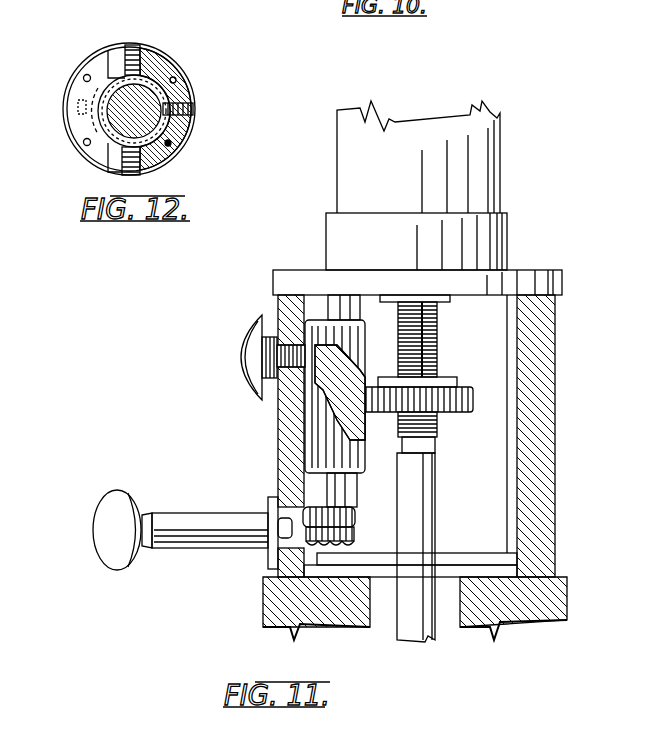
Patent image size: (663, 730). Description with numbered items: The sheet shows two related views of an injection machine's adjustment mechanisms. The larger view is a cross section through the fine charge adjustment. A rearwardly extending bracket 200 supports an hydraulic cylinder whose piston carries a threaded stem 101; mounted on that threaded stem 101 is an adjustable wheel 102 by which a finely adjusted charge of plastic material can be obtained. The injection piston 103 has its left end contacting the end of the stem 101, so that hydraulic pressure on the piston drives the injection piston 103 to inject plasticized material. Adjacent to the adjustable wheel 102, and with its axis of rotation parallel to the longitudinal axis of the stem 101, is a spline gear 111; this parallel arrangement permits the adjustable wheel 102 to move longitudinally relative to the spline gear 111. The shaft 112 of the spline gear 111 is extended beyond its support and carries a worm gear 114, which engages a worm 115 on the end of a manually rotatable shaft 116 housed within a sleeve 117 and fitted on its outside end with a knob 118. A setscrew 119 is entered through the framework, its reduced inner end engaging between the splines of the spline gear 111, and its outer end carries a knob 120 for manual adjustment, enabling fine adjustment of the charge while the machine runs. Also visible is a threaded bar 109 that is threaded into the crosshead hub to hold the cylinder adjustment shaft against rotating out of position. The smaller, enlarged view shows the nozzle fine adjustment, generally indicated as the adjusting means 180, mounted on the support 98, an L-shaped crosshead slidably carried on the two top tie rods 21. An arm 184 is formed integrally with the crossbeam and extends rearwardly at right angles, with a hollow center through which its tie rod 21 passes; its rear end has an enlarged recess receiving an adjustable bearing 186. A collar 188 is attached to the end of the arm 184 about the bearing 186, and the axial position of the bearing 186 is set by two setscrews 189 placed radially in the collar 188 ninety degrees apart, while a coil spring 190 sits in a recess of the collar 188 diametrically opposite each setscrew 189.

In FIG. 11, the threaded bar 109 is at (340, 193).
In FIG. 11, the stem 101 is at (435, 322).
In FIG. 11, the adjustable wheel 102 is at (452, 412).
In FIG. 11, the injection piston 103 is at (433, 500).
In FIG. 11, the spline gear 111 is at (323, 440).
In FIG. 11, the shaft 112 is at (327, 498).
In FIG. 11, the worm gear 114 is at (352, 528).
In FIG. 11, the worm 115 is at (338, 543).
In FIG. 11, the manually rotatable shaft 116 is at (282, 527).
In FIG. 11, the sleeve 117 is at (198, 520).
In FIG. 11, the knob 118 is at (113, 497).
In FIG. 11, the setscrew 119 is at (284, 336).
In FIG. 11, the knob 120 is at (243, 343).
In FIG. 11, the bracket 200 is at (553, 505).
In FIG. 11, the support 98 is at (567, 582).
In FIG. 12, the tie rod 21 is at (167, 97).
In FIG. 12, the adjusting means 180 is at (135, 29).
In FIG. 12, the arm 184 is at (153, 44).
In FIG. 12, the adjustable bearing 186 is at (187, 88).
In FIG. 12, the collar 188 is at (183, 133).
In FIG. 12, the setscrew 189 is at (117, 45).
In FIG. 12, the coil spring 190 is at (142, 160).